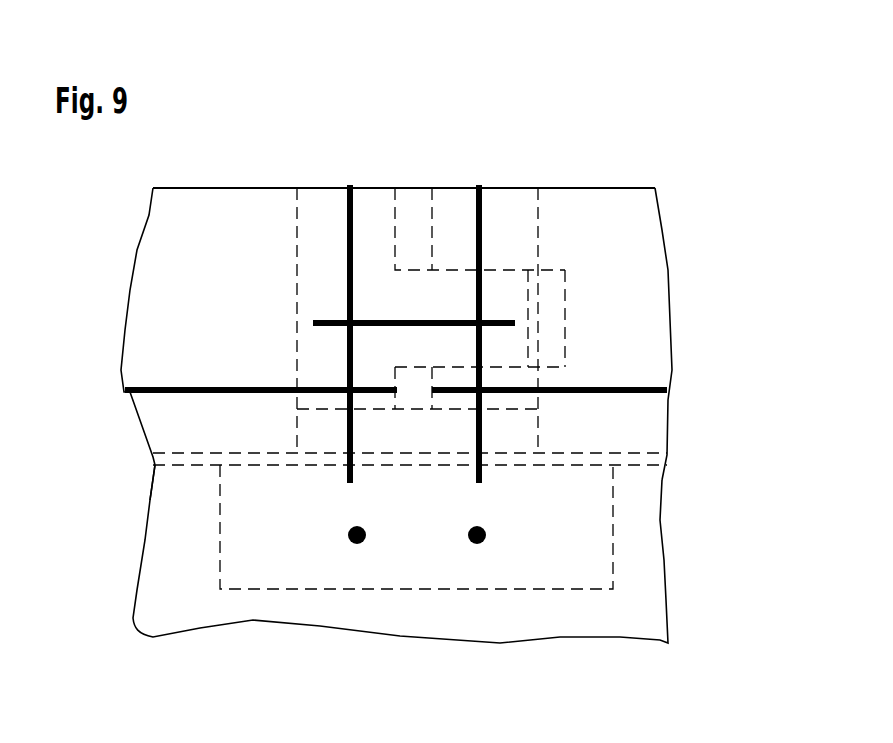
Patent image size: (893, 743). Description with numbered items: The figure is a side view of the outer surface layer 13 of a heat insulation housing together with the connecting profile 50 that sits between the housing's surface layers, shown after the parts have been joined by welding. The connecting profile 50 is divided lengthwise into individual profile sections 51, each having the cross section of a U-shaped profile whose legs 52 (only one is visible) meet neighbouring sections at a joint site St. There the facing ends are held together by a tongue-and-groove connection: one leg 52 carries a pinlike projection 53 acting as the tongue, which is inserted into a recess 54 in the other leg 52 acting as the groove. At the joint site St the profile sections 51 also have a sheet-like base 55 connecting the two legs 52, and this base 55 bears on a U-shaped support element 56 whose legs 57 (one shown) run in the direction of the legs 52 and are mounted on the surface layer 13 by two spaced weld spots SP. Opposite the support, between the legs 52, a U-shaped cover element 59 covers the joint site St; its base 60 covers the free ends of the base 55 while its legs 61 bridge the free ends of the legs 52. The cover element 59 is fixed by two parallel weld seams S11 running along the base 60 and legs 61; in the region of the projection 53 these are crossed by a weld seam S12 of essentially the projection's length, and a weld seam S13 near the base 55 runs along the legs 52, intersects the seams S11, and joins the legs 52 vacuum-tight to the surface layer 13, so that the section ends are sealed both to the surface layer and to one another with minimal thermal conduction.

The surface layer 13 is at (418, 612).
The connecting profile 50 is at (252, 176).
The profile section 51 is at (175, 232).
The leg 52 is at (163, 306).
The pinlike projection 53 is at (502, 280).
The recess 54 is at (540, 350).
The base 55 is at (175, 465).
The support element 56 is at (198, 553).
The leg of support element 57 is at (580, 548).
The cover element 59 is at (560, 411).
The base of cover element 60 is at (307, 433).
The leg of cover element 61 is at (318, 345).
The weld seam S11 is at (348, 207).
The weld seam S12 is at (390, 318).
The weld seam S13 is at (648, 392).
The weld spot SP is at (357, 545).
The joint site St is at (417, 433).